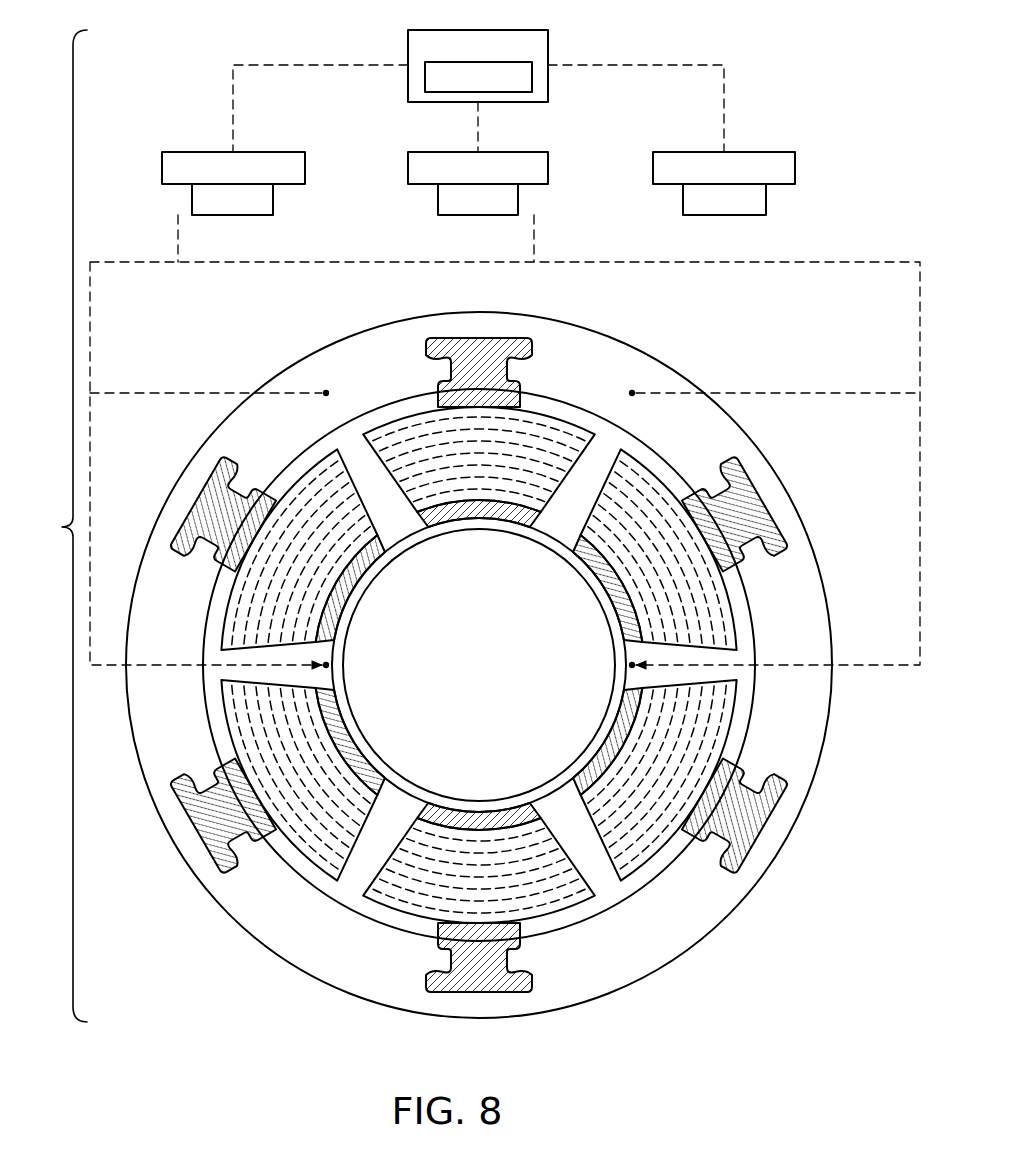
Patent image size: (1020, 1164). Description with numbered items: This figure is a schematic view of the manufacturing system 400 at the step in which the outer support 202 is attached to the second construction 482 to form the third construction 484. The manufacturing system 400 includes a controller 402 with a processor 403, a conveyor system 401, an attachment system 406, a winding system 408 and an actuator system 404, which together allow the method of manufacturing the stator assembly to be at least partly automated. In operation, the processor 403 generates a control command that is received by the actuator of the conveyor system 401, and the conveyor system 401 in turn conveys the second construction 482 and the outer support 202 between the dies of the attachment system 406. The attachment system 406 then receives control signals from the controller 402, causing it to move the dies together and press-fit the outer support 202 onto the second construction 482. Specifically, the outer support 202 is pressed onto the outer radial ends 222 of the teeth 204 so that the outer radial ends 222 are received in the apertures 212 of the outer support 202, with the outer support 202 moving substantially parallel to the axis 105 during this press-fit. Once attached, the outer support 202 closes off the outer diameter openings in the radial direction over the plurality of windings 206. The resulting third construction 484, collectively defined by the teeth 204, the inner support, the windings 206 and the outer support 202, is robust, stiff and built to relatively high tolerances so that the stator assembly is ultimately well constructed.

The manufacturing system 400 is at (46, 526).
The conveyor system 401 is at (218, 147).
The controller 402 is at (408, 52).
The processor 403 is at (520, 93).
The actuator system 404 is at (800, 186).
The attachment system 406 is at (448, 147).
The winding system 408 is at (779, 145).
The axis 105 is at (479, 663).
The outer support 202 is at (641, 375).
The teeth 204 is at (446, 351).
The windings 206 is at (407, 436).
The apertures 212 is at (502, 346).
The outer radial ends 222 is at (478, 338).
The second construction 482 is at (566, 409).
The third construction 484 is at (804, 499).